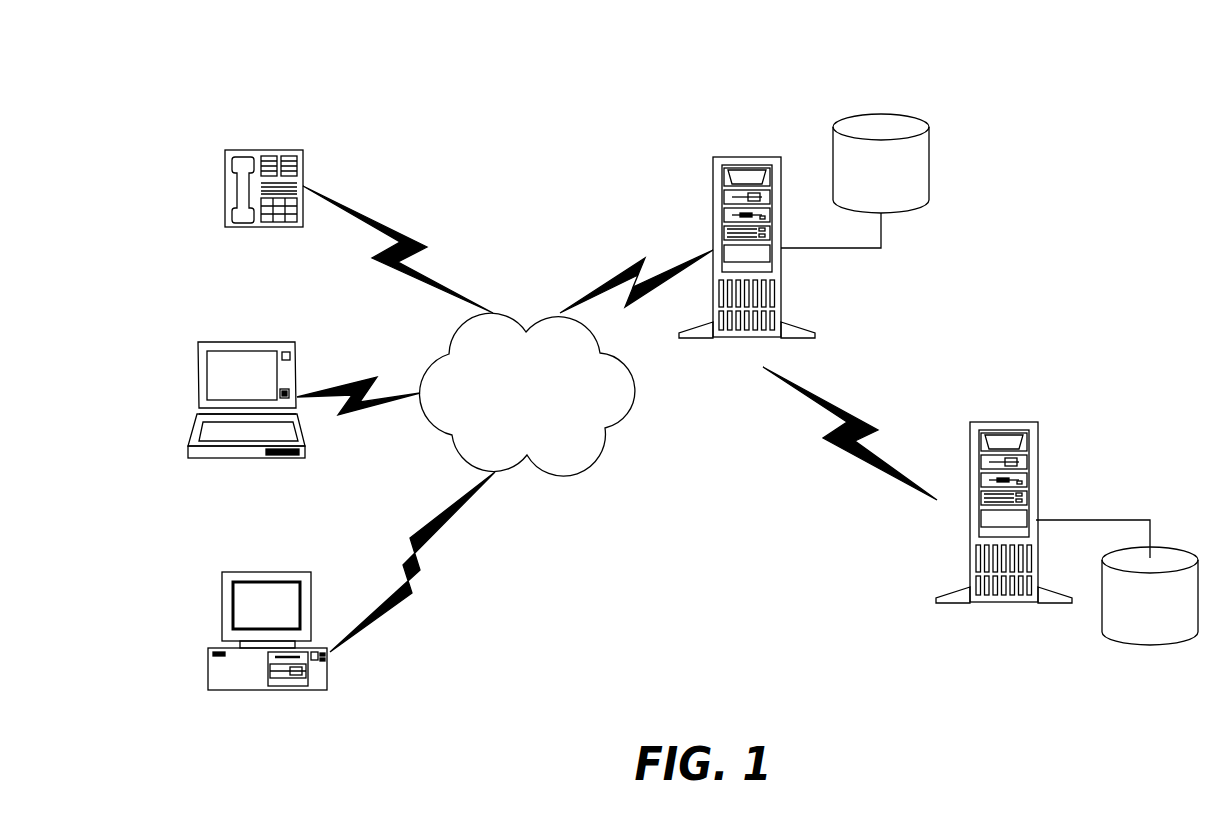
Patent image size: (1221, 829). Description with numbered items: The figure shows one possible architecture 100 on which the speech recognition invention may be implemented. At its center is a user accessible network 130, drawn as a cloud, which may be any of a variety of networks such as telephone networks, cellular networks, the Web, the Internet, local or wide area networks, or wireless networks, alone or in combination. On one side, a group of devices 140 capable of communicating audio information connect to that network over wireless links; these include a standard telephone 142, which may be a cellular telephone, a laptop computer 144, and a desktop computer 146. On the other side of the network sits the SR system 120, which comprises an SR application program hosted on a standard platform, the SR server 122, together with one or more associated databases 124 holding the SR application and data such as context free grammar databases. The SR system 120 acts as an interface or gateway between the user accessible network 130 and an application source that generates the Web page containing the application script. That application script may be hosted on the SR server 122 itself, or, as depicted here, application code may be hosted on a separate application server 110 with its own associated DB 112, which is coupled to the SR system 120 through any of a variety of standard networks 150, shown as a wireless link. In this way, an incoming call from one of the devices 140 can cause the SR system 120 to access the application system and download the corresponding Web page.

The architecture 100 is at (138, 126).
The application server 110 is at (1002, 421).
The DB 112 is at (1150, 596).
The SR system 120 is at (932, 85).
The SR server 122 is at (748, 155).
The associated databases 124 is at (881, 163).
The user accessible network 130 is at (527, 394).
The devices 140 is at (187, 148).
The standard telephone 142 is at (302, 230).
The laptop computer 144 is at (296, 460).
The desktop computer 146 is at (316, 692).
The standard networks 150 is at (765, 446).